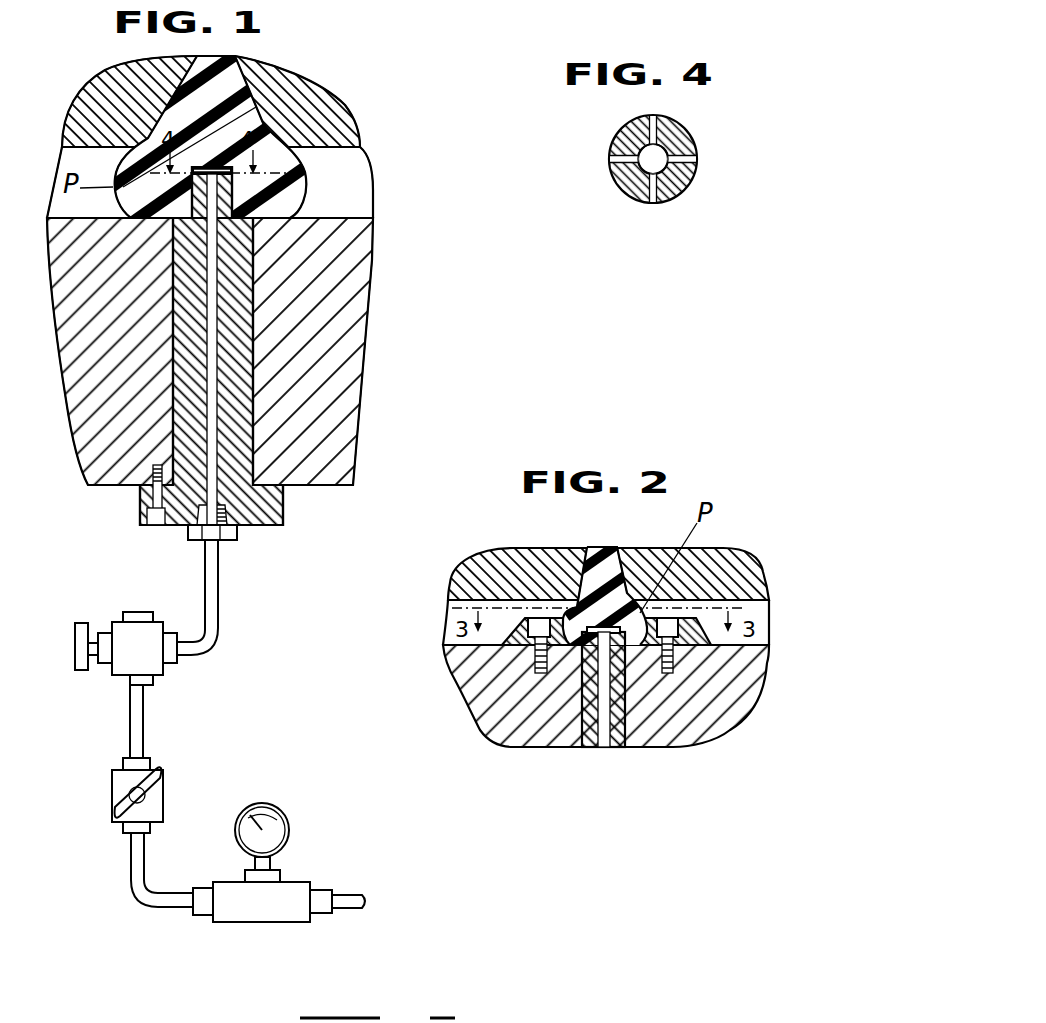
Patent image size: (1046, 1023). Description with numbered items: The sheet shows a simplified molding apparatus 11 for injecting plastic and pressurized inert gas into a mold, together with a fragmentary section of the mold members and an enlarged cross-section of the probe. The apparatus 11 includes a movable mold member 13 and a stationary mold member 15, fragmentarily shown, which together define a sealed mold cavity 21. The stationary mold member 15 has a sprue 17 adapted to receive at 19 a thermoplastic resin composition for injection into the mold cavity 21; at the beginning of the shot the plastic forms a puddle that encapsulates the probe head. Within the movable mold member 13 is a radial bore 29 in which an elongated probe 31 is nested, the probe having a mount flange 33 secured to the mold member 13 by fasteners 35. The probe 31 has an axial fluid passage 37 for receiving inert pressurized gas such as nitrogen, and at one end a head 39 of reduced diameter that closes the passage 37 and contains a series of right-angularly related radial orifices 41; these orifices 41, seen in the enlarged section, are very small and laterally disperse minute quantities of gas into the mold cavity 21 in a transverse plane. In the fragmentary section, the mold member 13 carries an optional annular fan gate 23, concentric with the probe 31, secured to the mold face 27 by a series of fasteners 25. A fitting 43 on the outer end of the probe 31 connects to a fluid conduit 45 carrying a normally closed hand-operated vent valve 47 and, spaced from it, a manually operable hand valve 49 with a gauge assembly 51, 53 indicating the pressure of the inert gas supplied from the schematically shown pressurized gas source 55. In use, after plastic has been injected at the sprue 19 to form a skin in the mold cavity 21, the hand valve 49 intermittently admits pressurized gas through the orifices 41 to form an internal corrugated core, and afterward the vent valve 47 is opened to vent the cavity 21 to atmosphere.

In FIG. 1, the molding apparatus 11 is at (415, 200).
In FIG. 1, the movable mold member 13 is at (75, 358).
In FIG. 2, the movable mold member 13 is at (480, 703).
In FIG. 1, the stationary mold member 15 is at (340, 113).
In FIG. 2, the stationary mold member 15 is at (740, 550).
In FIG. 1, the sprue 17 is at (232, 86).
In FIG. 2, the sprue 17 is at (610, 547).
In FIG. 1, the plastic material inlet 19 is at (207, 56).
In FIG. 2, the plastic material inlet 19 is at (600, 546).
In FIG. 1, the mold cavity 21 is at (360, 178).
In FIG. 2, the mold cavity 21 is at (452, 613).
In FIG. 2, the annular fan gate 23 is at (695, 648).
In FIG. 2, the fasteners 25 is at (668, 673).
In FIG. 1, the mold face 27 is at (362, 217).
In FIG. 2, the mold face 27 is at (447, 640).
In FIG. 1, the radial bore 29 is at (177, 430).
In FIG. 2, the radial bore 29 is at (593, 747).
In FIG. 1, the elongated probe 31 is at (238, 363).
In FIG. 2, the elongated probe 31 is at (622, 747).
In FIG. 1, the mount flange 33 is at (273, 510).
In FIG. 1, the fasteners 35 is at (158, 527).
In FIG. 1, the axial fluid passage 37 is at (212, 427).
In FIG. 4, the axial fluid passage 37 is at (657, 167).
In FIG. 2, the axial fluid passage 37 is at (605, 747).
In FIG. 1, the head 39 is at (195, 201).
In FIG. 4, the head 39 is at (695, 137).
In FIG. 1, the radial orifices 41 is at (240, 186).
In FIG. 4, the radial orifices 41 is at (610, 157).
In FIG. 1, the fitting 43 is at (232, 540).
In FIG. 1, the fluid conduit 45 is at (212, 632).
In FIG. 1, the vent valve 47 is at (130, 670).
In FIG. 1, the hand valve 49 is at (120, 788).
In FIG. 1, the gauge assembly 51 is at (270, 910).
In FIG. 1, the gauge assembly 53 is at (287, 822).
In FIG. 1, the pressurized gas source 55 is at (420, 887).